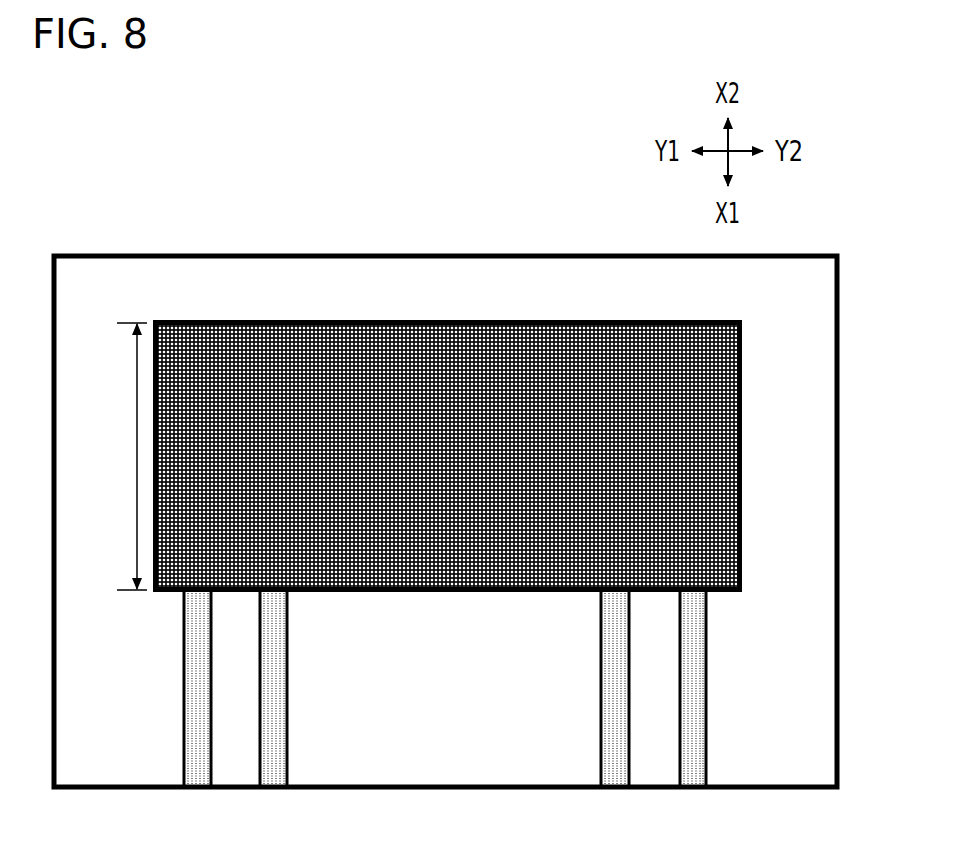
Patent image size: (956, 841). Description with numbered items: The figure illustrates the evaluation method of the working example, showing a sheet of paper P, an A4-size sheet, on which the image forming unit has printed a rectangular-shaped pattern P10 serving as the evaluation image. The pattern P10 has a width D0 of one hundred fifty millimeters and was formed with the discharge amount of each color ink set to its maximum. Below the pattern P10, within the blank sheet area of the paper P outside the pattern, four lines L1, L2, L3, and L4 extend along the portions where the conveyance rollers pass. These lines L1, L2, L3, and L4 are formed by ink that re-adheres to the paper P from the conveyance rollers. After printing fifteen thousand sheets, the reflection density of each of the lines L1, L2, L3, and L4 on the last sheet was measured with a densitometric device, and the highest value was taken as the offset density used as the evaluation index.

The paper P is at (112, 268).
The pattern P10 is at (248, 332).
The width D0 is at (123, 456).
The line L1 is at (193, 712).
The line L2 is at (282, 732).
The line L3 is at (608, 744).
The line L4 is at (697, 700).